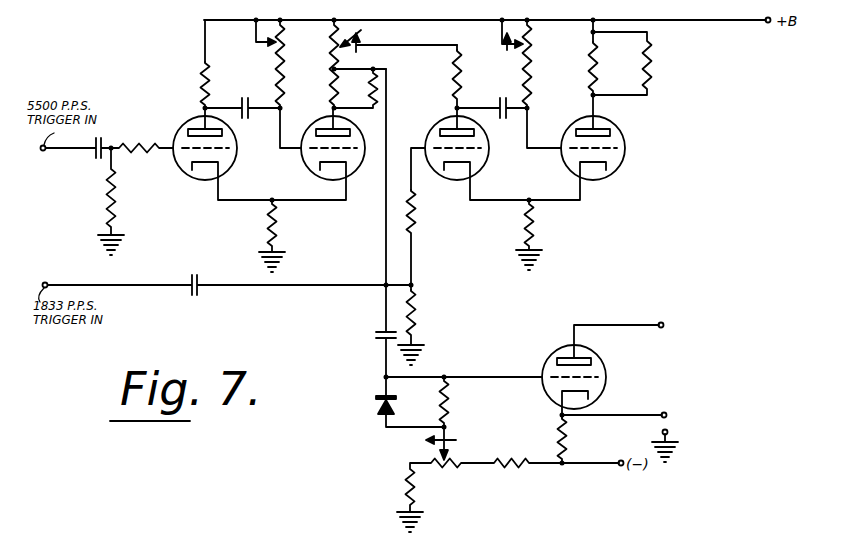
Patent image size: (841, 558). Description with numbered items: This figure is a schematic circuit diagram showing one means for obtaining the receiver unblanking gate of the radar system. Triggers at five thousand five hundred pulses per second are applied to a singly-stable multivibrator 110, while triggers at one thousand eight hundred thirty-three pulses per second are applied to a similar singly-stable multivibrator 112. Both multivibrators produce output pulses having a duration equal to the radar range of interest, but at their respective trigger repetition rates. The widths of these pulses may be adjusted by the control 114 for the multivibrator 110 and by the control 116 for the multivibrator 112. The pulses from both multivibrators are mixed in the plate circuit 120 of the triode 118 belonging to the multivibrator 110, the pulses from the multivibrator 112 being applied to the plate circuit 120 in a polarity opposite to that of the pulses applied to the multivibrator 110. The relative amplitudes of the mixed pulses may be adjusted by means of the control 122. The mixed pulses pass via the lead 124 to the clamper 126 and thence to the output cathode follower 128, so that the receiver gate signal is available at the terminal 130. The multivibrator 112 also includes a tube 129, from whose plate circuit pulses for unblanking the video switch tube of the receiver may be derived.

The singly-stable multivibrator 110 is at (275, 184).
The singly-stable multivibrator 112 is at (533, 184).
The control 114 is at (272, 58).
The control 116 is at (532, 62).
The triode 118 is at (345, 180).
The plate circuit 120 is at (323, 28).
The control 122 is at (398, 37).
The lead 124 is at (387, 100).
The clamper 126 is at (378, 402).
The output cathode follower 128 is at (551, 354).
The tube 129 is at (626, 140).
The terminal 130 is at (668, 409).